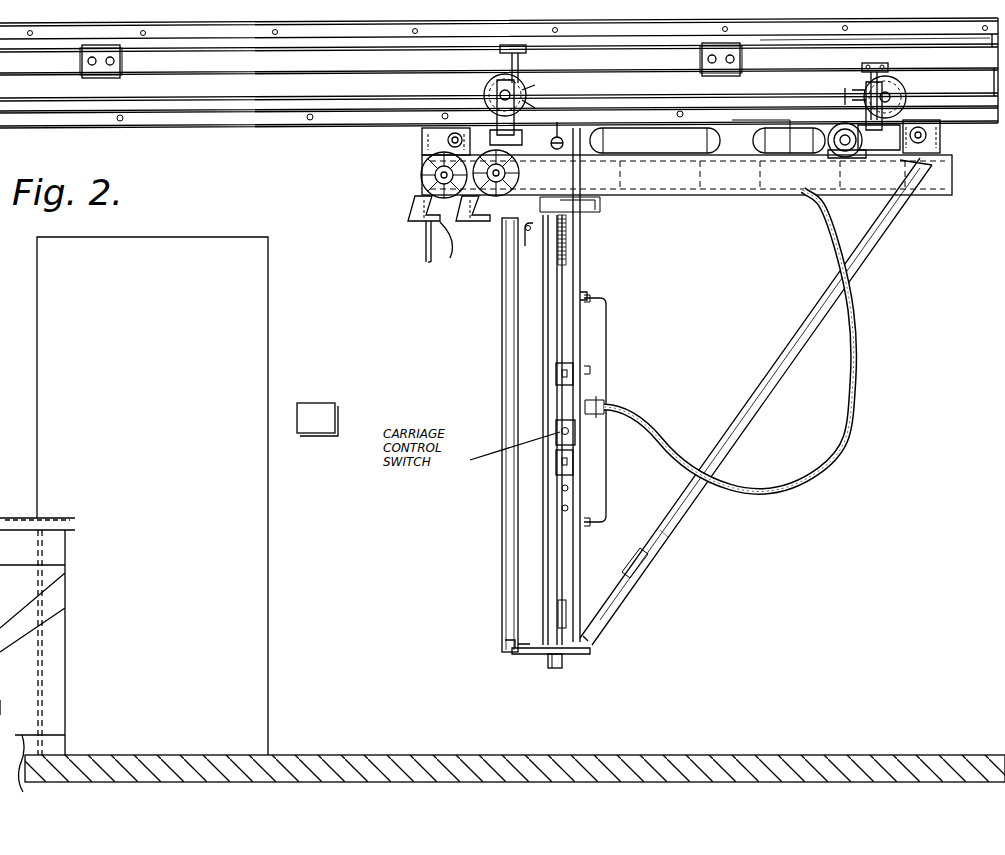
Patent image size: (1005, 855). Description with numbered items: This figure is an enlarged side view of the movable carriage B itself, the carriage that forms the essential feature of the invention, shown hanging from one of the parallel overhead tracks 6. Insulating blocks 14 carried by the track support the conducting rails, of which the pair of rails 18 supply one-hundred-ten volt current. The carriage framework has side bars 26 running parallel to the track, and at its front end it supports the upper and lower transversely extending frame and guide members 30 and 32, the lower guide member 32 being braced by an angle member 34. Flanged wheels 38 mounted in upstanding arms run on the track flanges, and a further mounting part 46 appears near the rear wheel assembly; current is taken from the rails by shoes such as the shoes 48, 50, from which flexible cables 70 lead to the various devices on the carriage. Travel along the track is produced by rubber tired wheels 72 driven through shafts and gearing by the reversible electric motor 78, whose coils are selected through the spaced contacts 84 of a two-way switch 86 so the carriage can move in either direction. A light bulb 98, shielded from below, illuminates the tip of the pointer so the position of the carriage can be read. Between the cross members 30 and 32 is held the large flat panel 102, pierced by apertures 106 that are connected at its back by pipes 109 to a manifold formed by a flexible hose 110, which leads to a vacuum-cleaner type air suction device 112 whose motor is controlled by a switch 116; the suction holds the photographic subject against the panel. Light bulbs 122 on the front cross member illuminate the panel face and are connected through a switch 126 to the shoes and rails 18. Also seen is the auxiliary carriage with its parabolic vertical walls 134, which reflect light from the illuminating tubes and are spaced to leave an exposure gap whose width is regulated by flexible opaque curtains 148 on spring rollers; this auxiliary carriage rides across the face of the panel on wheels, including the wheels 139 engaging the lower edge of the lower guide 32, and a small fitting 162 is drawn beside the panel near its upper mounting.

The track 6 is at (378, 90).
The insulating block 14 is at (703, 60).
The conducting rail 18 is at (815, 42).
The side bar 26 is at (722, 178).
The upper frame and guide member 30 is at (570, 214).
The lower guide member 32 is at (560, 651).
The angle member 34 is at (758, 388).
The flanged wheel 38 is at (910, 100).
The guide roller bracket 46 is at (940, 135).
The shoe 48 is at (880, 66).
The shoe 50 is at (524, 52).
The flexible cable 70 is at (520, 118).
The rubber tired wheel 72 is at (832, 126).
The electric motor 78 is at (772, 132).
The contact 84 is at (627, 400).
The two-way switch 86 is at (604, 405).
The light bulb 98 is at (562, 130).
The panel 102 is at (573, 278).
The aperture 106 is at (583, 296).
The pipe 109 is at (607, 333).
The flexible hose 110 is at (797, 481).
The air suction device 112 is at (648, 136).
The switch 116 is at (428, 178).
The light bulb 122 is at (441, 239).
The switch 126 is at (560, 468).
The vertical wall 134 is at (535, 565).
The wheel 139 is at (553, 664).
The curtain 148 is at (503, 381).
The latch hook 162 is at (525, 240).
The movable carriage B is at (653, 539).